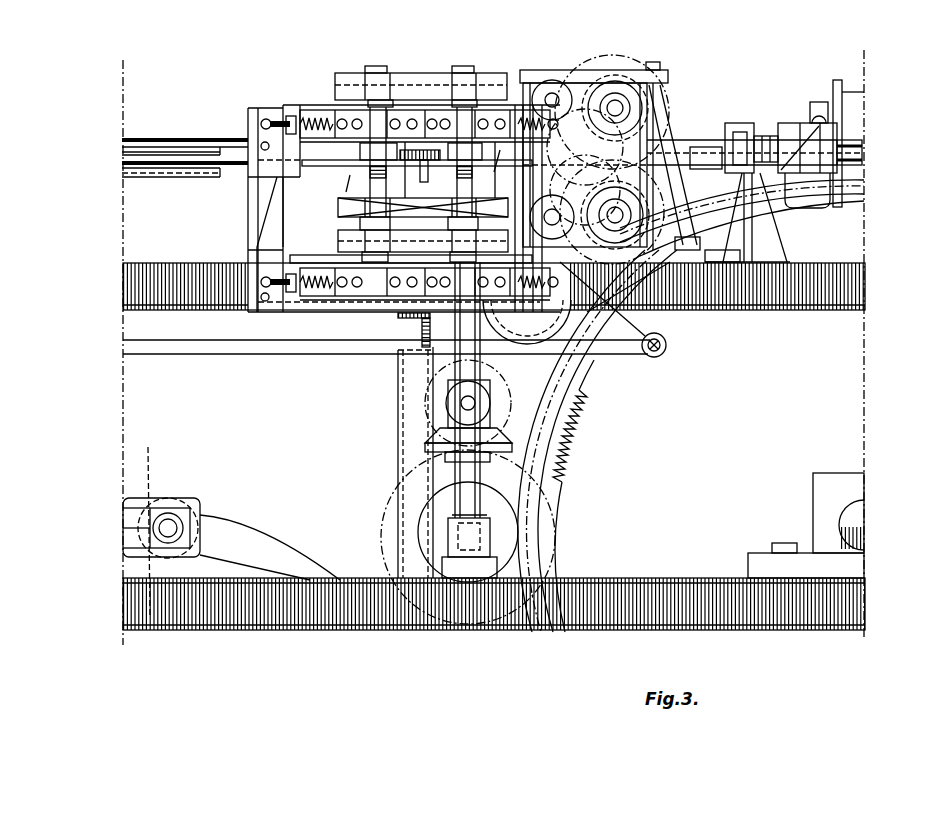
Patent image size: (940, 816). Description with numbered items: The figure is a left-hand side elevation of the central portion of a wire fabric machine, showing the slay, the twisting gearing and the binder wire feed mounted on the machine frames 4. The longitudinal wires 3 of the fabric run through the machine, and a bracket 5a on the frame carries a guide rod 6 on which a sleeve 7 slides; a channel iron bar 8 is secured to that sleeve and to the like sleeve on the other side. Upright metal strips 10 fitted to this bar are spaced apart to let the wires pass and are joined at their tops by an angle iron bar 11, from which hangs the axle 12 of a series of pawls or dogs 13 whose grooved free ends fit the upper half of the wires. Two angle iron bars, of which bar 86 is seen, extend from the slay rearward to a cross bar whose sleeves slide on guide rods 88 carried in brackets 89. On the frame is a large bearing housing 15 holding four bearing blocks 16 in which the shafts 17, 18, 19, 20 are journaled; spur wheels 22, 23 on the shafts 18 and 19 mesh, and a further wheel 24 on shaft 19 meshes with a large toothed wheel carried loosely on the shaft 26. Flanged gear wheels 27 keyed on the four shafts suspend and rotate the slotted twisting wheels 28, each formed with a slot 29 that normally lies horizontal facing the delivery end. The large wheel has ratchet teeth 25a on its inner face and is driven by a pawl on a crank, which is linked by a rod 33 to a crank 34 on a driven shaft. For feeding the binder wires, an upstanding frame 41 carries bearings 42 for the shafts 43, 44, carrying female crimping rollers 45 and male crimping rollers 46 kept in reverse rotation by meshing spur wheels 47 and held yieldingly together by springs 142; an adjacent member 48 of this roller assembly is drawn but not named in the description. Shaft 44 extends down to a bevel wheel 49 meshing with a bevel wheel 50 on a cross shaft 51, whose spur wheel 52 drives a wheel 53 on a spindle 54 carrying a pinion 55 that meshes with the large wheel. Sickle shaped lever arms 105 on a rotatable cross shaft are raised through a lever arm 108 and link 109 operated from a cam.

The longitudinal wires 3 is at (427, 208).
The machine frames 4 is at (157, 266).
The bracket 5a is at (784, 258).
The guide rod 6 is at (855, 142).
The sleeve 7 is at (788, 122).
The channel iron bar 8 is at (786, 190).
The upright metal strips 10 is at (846, 94).
The angle iron bar 11 is at (833, 95).
The axle 12 is at (810, 118).
The pawls or dogs 13 is at (790, 142).
The bearing bracket or housing 15 is at (664, 164).
The bearing blocks 16 is at (538, 92).
The shaft 17 is at (552, 100).
The shaft 18 is at (615, 108).
The shaft 19 is at (615, 215).
The shaft 20 is at (552, 217).
The spur wheel 22 is at (668, 125).
The spur wheel 23 is at (690, 235).
The wheel 24 is at (688, 216).
The ratchet teeth 25a is at (583, 440).
The shaft 26 is at (845, 518).
The flanged gear wheels 27 is at (600, 258).
The slotted twisting wheel 28 is at (614, 162).
The slot 29 is at (585, 190).
The rod 33 is at (282, 560).
The crank 34 is at (182, 498).
The upstanding frame 41 is at (322, 105).
The bearings 42 is at (425, 205).
The shaft 43 is at (384, 68).
The shaft 44 is at (470, 68).
The female crimping rollers 45 is at (492, 80).
The male crimping rollers 46 is at (420, 73).
The spur wheels 47 is at (468, 180).
The cross bar 48 is at (345, 205).
The bevel wheel 49 is at (502, 440).
The bevel wheel 50 is at (510, 398).
The cross shaft 51 is at (464, 405).
The spur wheel 52 is at (400, 395).
The wheel 53 is at (382, 520).
The spindle 54 is at (476, 532).
The pinion 55 is at (516, 500).
The angle iron bar 86 is at (205, 178).
The guide rods 88 is at (192, 140).
The brackets 89 is at (284, 244).
The sickle shaped lever arms 105 is at (527, 323).
The lever arm 108 is at (663, 338).
The link 109 is at (640, 350).
The springs 142 is at (330, 139).